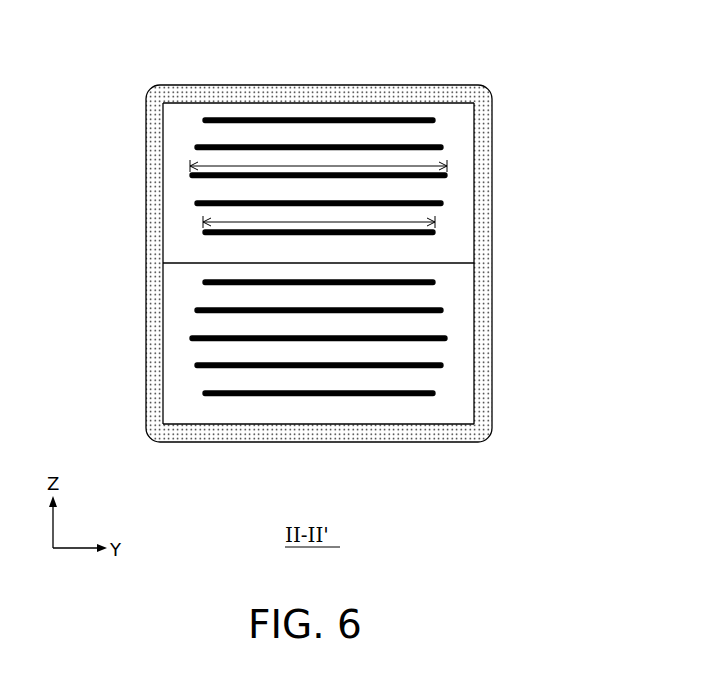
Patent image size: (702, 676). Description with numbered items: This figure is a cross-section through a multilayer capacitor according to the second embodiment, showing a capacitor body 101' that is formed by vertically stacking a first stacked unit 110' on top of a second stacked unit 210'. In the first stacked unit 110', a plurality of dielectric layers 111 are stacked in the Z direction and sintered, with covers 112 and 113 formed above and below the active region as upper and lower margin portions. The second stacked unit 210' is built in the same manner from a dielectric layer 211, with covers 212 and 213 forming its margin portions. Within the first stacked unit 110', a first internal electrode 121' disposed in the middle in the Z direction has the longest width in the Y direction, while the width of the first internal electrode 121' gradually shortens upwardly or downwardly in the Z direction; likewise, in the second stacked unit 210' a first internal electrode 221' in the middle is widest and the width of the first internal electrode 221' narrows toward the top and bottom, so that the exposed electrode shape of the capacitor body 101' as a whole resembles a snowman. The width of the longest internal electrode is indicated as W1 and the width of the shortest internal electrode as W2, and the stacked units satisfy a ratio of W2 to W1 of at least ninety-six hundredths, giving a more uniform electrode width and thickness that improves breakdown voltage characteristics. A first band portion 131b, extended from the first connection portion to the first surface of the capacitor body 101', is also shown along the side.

The capacitor body 101' is at (323, 265).
The first stacked unit 110' is at (319, 141).
The dielectric layer 111 is at (220, 132).
The cover 112 is at (323, 108).
The cover 113 is at (280, 247).
The first internal electrode 121' is at (315, 71).
The first band portion 131b is at (484, 366).
The second stacked unit 210' is at (280, 384).
The dielectric layer 211 is at (220, 298).
The cover 212 is at (268, 414).
The cover 213 is at (270, 272).
The first internal electrode 221' is at (319, 451).
The maximum width W1 is at (320, 165).
The minimum width W2 is at (320, 222).